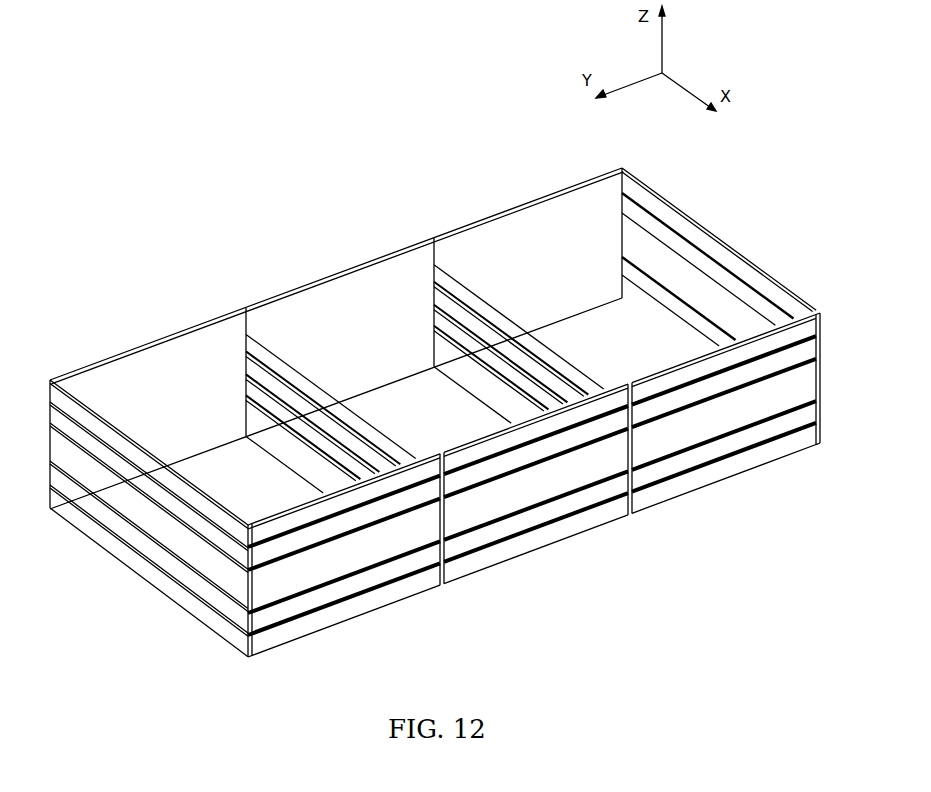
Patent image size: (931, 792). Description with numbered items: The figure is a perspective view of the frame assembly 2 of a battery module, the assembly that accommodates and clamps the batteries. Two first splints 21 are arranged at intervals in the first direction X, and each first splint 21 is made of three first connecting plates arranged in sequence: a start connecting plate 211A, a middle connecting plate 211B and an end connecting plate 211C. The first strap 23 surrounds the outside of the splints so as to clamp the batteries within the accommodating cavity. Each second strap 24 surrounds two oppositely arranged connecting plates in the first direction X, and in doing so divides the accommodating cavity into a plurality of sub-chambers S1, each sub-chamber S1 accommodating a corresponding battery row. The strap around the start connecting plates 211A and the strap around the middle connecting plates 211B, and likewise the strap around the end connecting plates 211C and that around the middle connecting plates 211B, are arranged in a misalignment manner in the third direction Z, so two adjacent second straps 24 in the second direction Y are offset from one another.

The frame assembly 2 is at (331, 205).
The first splint 21 is at (140, 513).
The start connecting plate 211A is at (342, 617).
The middle connecting plate 211B is at (503, 553).
The end connecting plate 211C is at (726, 472).
The first strap 23 is at (350, 525).
The second strap 24 is at (285, 444).
The sub-chamber S1 is at (428, 405).